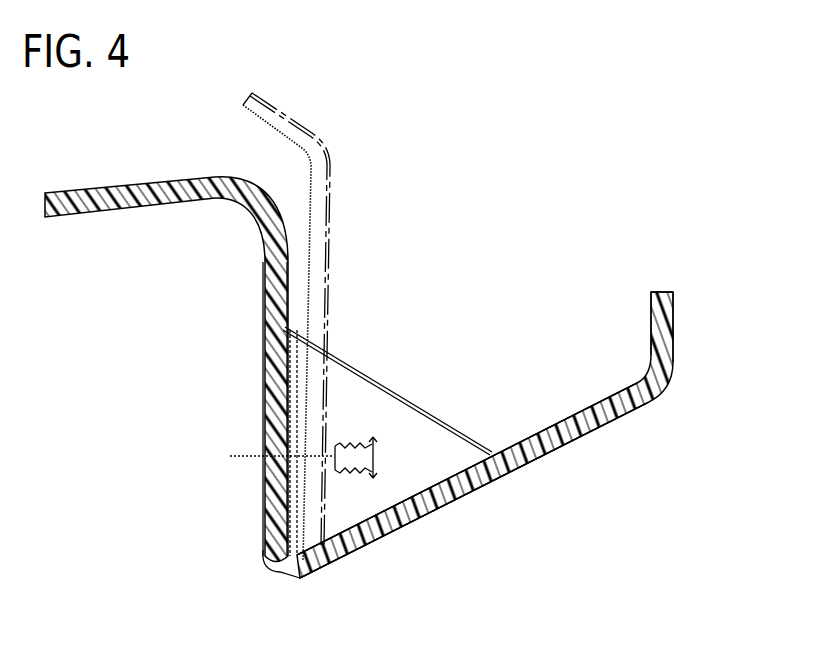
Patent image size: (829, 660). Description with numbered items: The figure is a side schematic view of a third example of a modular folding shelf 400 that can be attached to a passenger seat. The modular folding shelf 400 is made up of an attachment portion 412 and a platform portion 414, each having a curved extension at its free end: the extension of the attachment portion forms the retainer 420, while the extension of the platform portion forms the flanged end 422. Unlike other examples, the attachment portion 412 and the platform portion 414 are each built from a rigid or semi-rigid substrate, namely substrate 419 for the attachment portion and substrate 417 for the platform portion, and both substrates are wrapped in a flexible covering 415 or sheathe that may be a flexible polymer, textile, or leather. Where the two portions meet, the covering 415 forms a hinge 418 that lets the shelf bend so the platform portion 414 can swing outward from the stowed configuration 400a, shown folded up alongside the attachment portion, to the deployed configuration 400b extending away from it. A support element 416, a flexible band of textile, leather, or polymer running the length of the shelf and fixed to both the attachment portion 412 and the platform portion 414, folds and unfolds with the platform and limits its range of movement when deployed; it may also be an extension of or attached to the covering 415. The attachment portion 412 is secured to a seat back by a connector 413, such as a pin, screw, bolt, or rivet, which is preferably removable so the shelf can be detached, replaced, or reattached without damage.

The modular folding shelf 400 is at (568, 185).
The stowed configuration 400a is at (319, 132).
The deployed configuration 400b is at (638, 410).
The attachment portion 412 is at (263, 510).
The connector 413 is at (375, 457).
The platform portion 414 is at (530, 460).
The flexible covering 415 is at (584, 436).
The support element 416 is at (426, 409).
The substrate 417 is at (484, 489).
The hinge 418 is at (283, 566).
The substrate 419 is at (265, 373).
The retainer 420 is at (107, 190).
The flanged end 422 is at (674, 300).